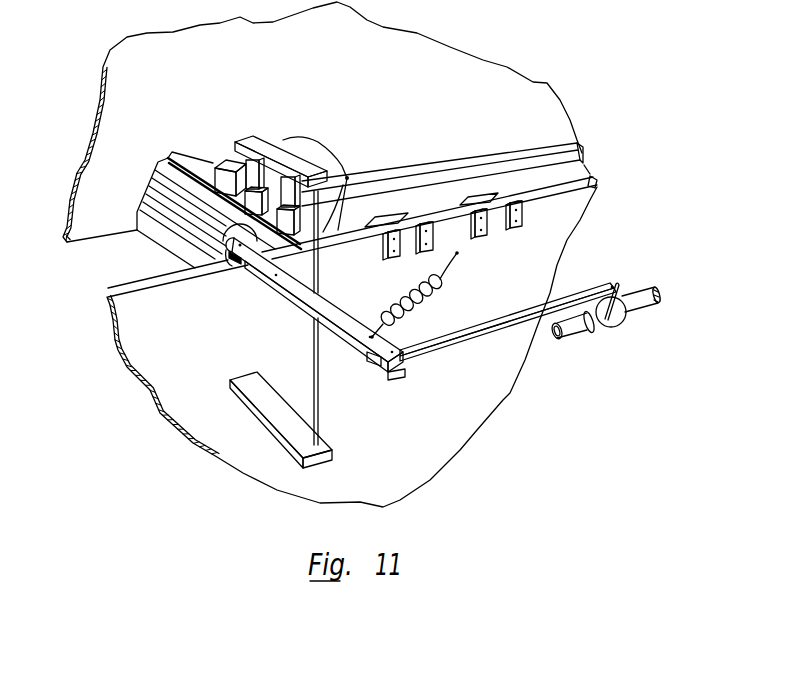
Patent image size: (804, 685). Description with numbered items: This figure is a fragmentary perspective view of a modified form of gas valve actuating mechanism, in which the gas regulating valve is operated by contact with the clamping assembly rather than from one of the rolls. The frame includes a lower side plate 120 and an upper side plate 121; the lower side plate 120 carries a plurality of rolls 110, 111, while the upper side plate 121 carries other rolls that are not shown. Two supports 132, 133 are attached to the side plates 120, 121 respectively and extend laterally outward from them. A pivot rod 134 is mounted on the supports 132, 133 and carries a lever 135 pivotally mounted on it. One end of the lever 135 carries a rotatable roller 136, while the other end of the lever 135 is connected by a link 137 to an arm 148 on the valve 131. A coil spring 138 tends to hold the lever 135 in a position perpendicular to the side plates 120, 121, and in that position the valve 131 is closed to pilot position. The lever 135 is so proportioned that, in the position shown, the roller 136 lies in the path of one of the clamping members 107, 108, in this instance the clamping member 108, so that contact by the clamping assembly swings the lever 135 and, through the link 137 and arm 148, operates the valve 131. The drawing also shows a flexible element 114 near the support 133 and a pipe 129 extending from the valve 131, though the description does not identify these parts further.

The clamping member 107 is at (226, 159).
The clamping member 108 is at (213, 196).
The roll 110 is at (386, 233).
The roll 111 is at (185, 228).
The cable 114 is at (348, 180).
The lower side plate 120 is at (137, 338).
The upper side plate 121 is at (88, 165).
The pipe 129 is at (660, 293).
The valve 131 is at (613, 322).
The support 132 is at (280, 415).
The support 133 is at (302, 173).
The pivot rod 134 is at (320, 273).
The lever 135 is at (305, 300).
The roller 136 is at (240, 264).
The link 137 is at (525, 315).
The coil spring 138 is at (432, 280).
The arm 148 is at (616, 285).